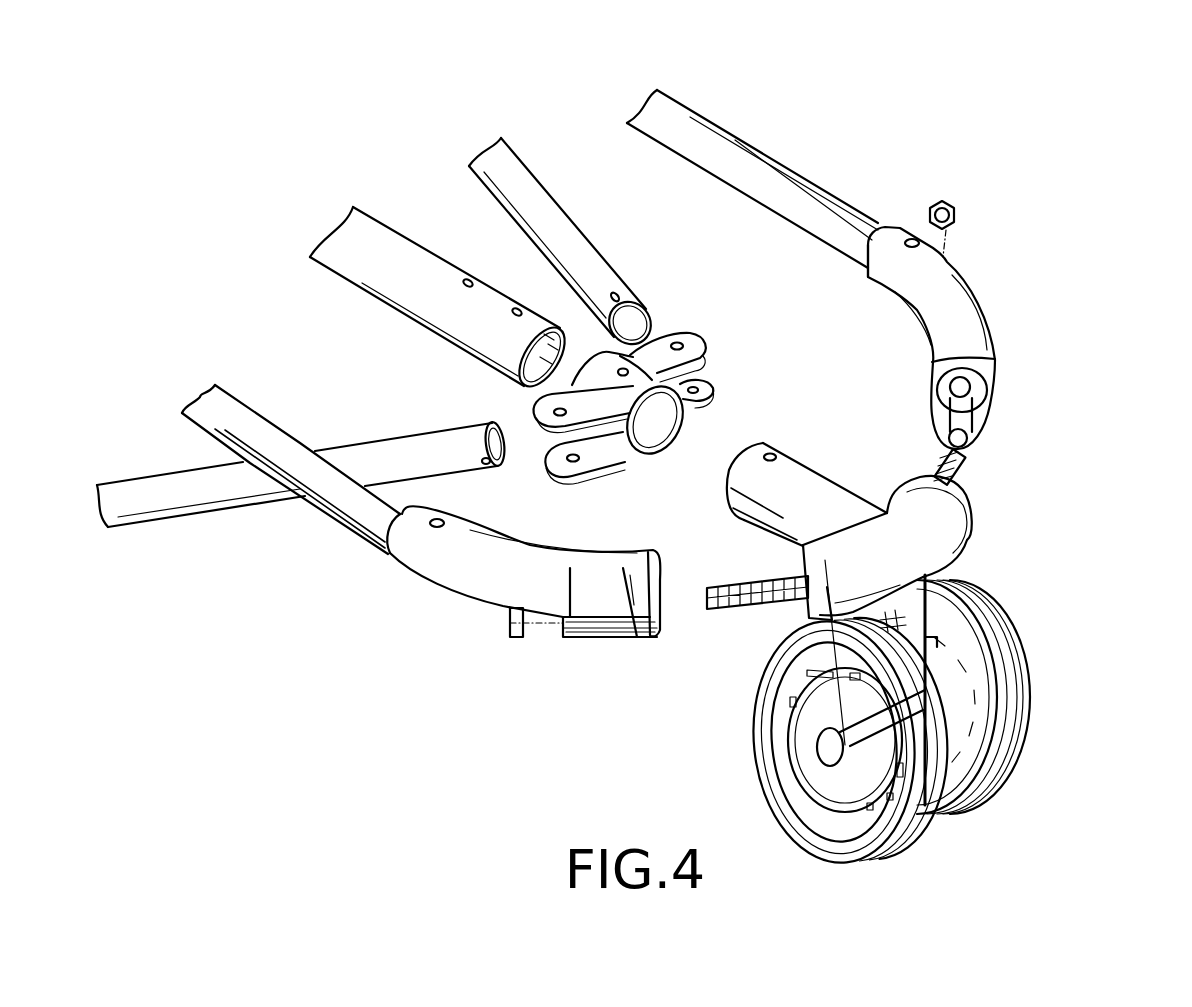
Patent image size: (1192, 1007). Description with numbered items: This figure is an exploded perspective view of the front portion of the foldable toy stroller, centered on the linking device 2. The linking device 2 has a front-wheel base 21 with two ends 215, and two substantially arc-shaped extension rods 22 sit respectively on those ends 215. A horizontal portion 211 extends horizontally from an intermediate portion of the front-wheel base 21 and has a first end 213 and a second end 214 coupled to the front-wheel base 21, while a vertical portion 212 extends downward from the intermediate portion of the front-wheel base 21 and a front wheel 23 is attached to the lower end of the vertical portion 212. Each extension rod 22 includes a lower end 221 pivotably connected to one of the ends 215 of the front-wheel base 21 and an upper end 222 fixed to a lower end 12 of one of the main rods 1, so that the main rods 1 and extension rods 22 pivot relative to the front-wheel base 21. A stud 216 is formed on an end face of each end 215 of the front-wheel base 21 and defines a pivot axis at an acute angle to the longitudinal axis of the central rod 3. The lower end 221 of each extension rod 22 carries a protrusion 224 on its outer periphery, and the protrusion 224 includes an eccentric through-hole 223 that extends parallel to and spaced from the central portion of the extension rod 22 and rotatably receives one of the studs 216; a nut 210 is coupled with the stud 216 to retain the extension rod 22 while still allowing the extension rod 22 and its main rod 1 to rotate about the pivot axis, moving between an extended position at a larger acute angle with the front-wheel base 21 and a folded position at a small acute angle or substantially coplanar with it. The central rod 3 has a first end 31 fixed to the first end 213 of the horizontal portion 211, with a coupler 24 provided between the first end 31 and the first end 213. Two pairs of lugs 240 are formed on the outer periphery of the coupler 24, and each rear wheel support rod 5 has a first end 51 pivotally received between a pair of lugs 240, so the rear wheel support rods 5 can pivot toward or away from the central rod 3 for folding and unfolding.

The main rod 1 is at (222, 418).
The lower end of main rod 12 is at (402, 535).
The linking device 2 is at (931, 637).
The front-wheel base 21 is at (917, 555).
The horizontal portion 211 is at (834, 497).
The vertical portion 212 is at (917, 647).
The first end of horizontal portion 213 is at (778, 452).
The second end of horizontal portion 214 is at (876, 513).
The end of front-wheel base 215 is at (847, 752).
The stud 216 is at (715, 610).
The extension rod 22 is at (457, 575).
The lower end of extension rod 221 is at (626, 580).
The upper end of extension rod 222 is at (407, 537).
The eccentric through-hole 223 is at (587, 637).
The protrusion 224 is at (617, 637).
The front wheel 23 is at (997, 742).
The coupler 24 is at (650, 380).
The lugs 240 is at (693, 337).
The nut 210 is at (513, 637).
The central rod 3 is at (382, 292).
The first end of central rod 31 is at (511, 337).
The rear wheel support rod 5 is at (180, 494).
The first end of rear wheel support rod 51 is at (490, 462).